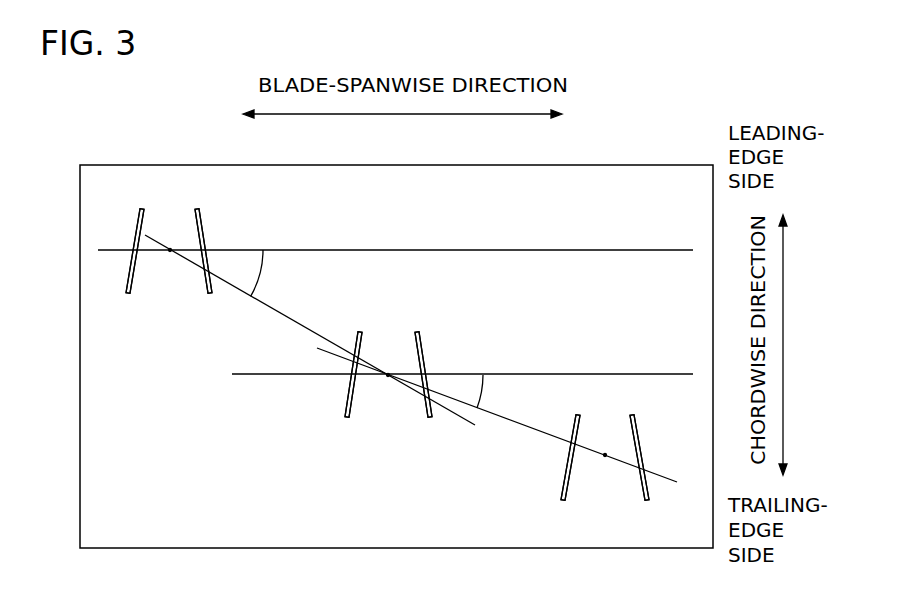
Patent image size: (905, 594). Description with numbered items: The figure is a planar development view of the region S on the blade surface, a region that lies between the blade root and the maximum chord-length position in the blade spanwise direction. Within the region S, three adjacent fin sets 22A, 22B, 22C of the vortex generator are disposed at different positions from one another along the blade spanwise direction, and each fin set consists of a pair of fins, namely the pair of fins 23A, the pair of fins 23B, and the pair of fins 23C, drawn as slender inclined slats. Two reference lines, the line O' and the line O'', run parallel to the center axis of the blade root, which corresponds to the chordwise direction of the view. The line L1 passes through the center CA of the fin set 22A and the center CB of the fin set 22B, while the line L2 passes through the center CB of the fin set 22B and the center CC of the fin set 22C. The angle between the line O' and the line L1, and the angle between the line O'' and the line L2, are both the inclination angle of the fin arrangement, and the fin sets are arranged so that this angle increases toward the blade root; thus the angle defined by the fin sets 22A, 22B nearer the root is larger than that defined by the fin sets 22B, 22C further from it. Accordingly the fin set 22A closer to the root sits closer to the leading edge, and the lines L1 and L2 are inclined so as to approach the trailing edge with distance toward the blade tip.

The region S is at (652, 164).
The line O' is at (395, 216).
The line O'' is at (462, 339).
The line L1 is at (268, 305).
The line L2 is at (527, 427).
The center of fin set CA is at (170, 252).
The center of fin set CB is at (388, 377).
The center of fin set CC is at (605, 457).
The fin set 22A is at (224, 210).
The fin set 22B is at (446, 331).
The fin set 22C is at (655, 403).
The fins 23A is at (138, 225).
The fins 23B is at (352, 350).
The fins 23C is at (572, 427).